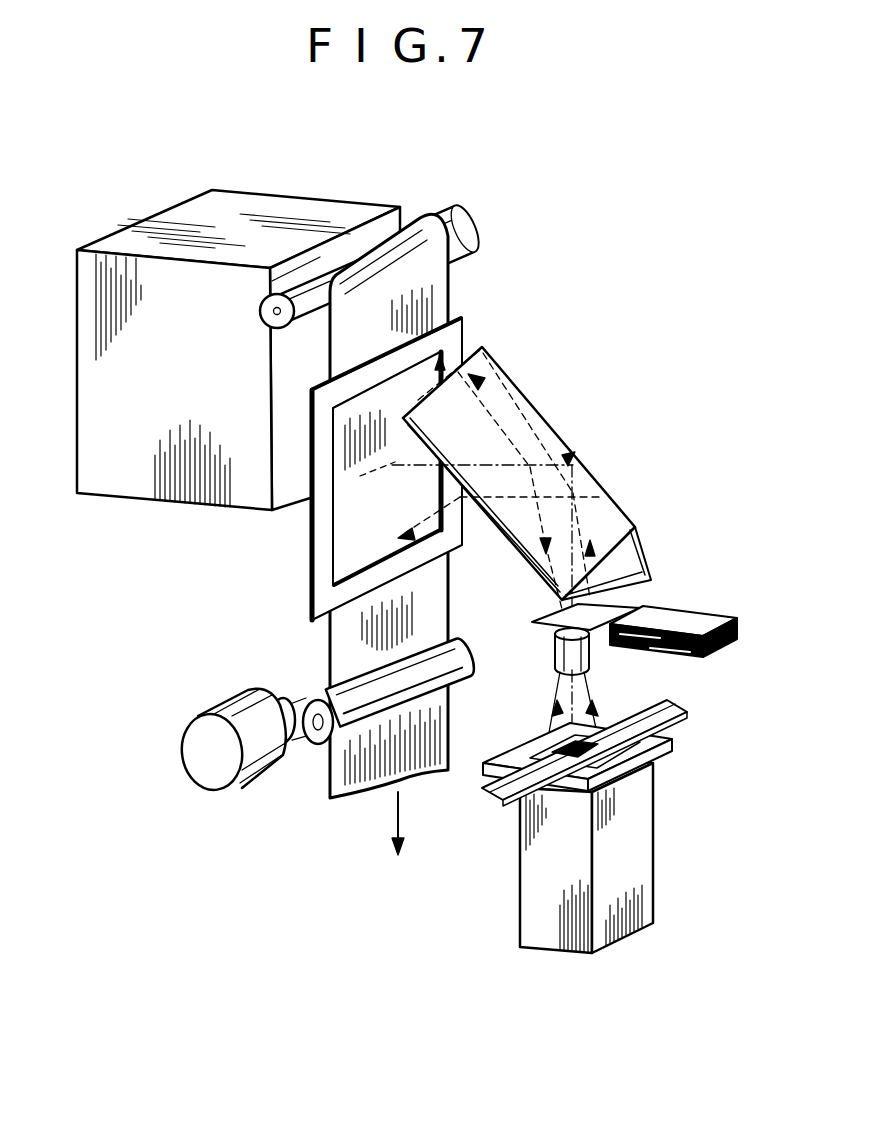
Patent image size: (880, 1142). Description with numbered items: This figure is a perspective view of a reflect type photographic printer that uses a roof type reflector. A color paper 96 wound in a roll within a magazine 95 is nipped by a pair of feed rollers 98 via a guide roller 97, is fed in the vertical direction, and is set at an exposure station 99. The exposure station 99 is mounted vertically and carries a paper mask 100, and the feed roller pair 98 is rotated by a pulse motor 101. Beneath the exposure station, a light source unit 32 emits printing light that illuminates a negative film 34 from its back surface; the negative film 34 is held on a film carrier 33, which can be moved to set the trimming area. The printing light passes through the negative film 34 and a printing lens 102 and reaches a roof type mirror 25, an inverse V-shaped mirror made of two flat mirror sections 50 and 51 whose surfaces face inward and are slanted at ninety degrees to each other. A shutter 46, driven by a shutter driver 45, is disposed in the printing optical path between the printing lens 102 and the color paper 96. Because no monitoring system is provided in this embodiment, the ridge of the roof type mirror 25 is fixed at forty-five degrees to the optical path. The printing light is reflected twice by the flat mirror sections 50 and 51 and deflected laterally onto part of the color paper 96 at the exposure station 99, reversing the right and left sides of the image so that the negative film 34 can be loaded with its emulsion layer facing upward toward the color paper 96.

The magazine 95 is at (92, 352).
The film supply roller 97 is at (458, 228).
The color paper 96 is at (330, 636).
The paper mask 100 is at (318, 558).
The exposure station 99 is at (352, 478).
The feed rollers 98 is at (318, 746).
The pulse motor 101 is at (205, 773).
The roof type mirror 25 is at (552, 400).
The flat mirror section 50 is at (512, 542).
The flat mirror section 51 is at (648, 553).
The shutter 46 is at (545, 628).
The shutter driver 45 is at (712, 618).
The printing lens 102 is at (553, 662).
The negative film 34 is at (680, 692).
The film carrier 33 is at (670, 742).
The light source unit 32 is at (668, 848).